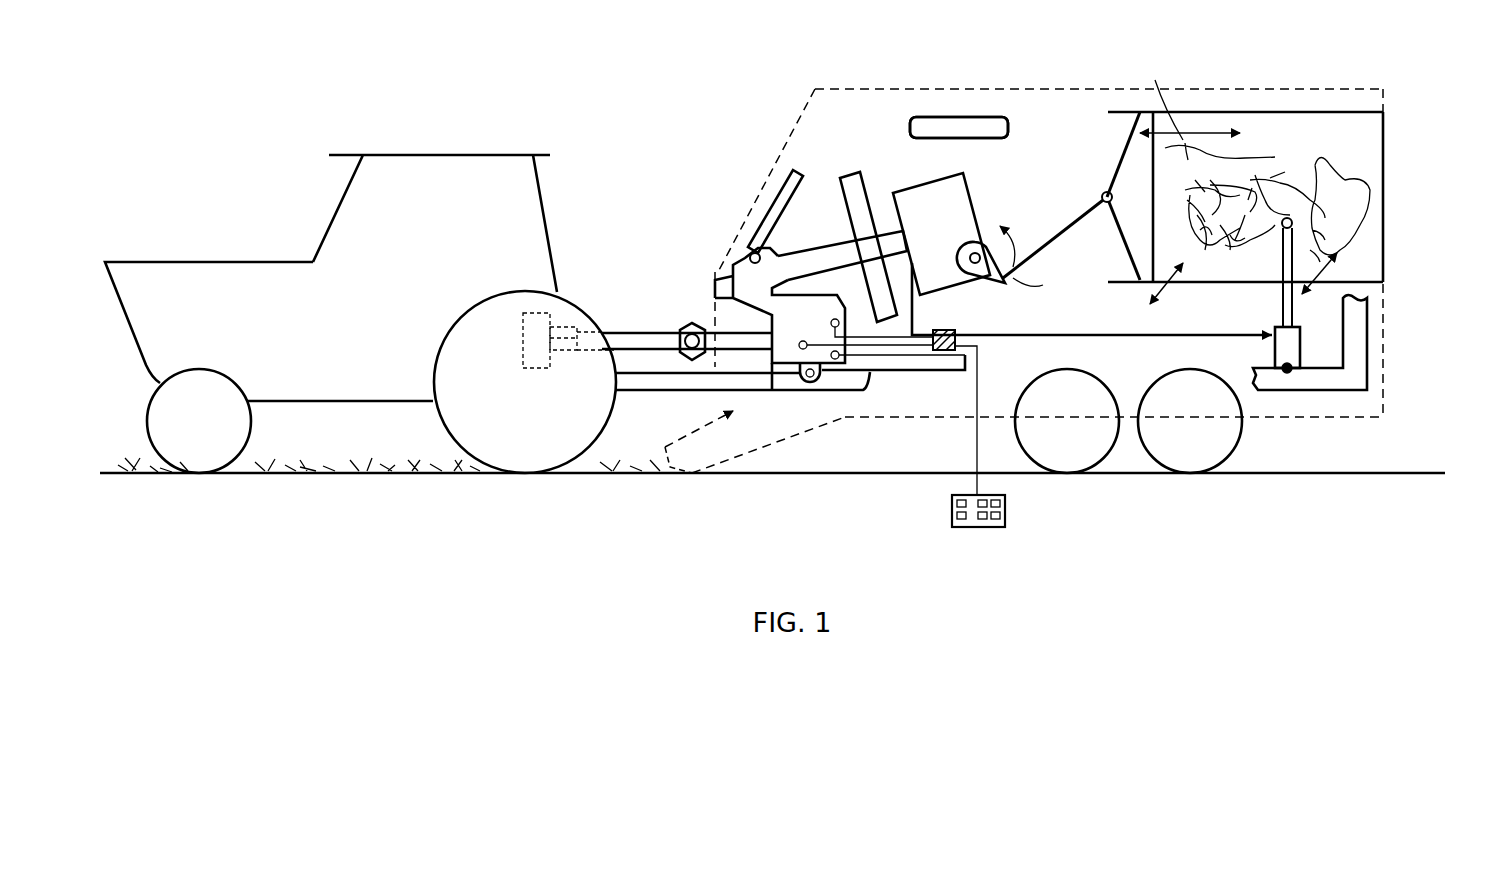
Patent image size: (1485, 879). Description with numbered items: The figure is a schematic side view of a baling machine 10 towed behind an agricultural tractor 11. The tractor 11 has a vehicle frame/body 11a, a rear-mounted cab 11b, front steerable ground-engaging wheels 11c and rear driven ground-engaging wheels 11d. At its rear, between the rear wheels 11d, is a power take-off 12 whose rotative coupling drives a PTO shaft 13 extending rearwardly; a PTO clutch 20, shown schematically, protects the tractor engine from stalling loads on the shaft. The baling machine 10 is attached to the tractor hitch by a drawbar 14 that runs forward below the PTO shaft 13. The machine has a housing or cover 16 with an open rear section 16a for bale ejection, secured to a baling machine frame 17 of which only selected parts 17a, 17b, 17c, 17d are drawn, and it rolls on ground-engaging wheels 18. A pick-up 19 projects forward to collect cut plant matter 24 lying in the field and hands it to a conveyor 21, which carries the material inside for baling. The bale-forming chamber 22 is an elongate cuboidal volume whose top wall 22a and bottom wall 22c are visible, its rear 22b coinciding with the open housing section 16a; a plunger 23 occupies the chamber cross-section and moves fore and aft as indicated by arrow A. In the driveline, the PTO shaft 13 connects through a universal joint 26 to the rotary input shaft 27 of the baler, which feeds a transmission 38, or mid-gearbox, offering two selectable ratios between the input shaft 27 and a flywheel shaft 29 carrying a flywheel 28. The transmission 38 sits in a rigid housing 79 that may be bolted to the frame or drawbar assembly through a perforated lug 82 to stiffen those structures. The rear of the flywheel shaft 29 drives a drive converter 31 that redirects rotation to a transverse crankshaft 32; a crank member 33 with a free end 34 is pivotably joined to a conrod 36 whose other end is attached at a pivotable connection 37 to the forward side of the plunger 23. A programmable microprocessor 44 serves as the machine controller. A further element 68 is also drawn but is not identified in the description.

The baling machine 10 is at (1007, 270).
The agricultural tractor 11 is at (360, 295).
The vehicle frame/body 11a is at (213, 283).
The rear-mounted cab 11b is at (385, 178).
The front ground-engaging wheels 11c is at (215, 455).
The rear ground-engaging wheels 11d is at (510, 455).
The power take-off 12 is at (538, 328).
The PTO shaft 13 is at (640, 340).
The drawbar 14 is at (635, 383).
The housing 16 is at (1048, 90).
The open housing section 16a is at (1383, 125).
The baling machine frame 17 is at (995, 127).
The frame part 17a is at (792, 382).
The frame part 17b is at (801, 157).
The frame part 17c is at (940, 127).
The frame part 17d is at (1358, 345).
The ground-engaging wheels 18 is at (1067, 455).
The pick-up 19 is at (665, 472).
The PTO clutch 20 is at (568, 342).
The conveyor 21 is at (705, 453).
The bale-forming chamber 22 is at (1287, 173).
The top wall 22a is at (1218, 112).
The rear of bale-forming chamber 22b is at (1383, 167).
The bottom wall 22c is at (1372, 275).
The plunger 23 is at (1122, 140).
The cut plant matter 24 is at (352, 478).
The universal joint 26 is at (688, 325).
The rotary input shaft 27 is at (733, 342).
The flywheel 28 is at (843, 175).
The flywheel shaft 29 is at (893, 193).
The drive converter 31 is at (907, 200).
The crankshaft 32 is at (977, 250).
The crank member 33 is at (983, 267).
The free end 34 is at (1010, 275).
The conrod 36 is at (1082, 213).
The pivotable connection 37 is at (1100, 205).
The transmission 38 is at (742, 277).
The programmable microprocessor 44 is at (957, 347).
The sensor 68 is at (767, 353).
The rigid housing 79 is at (800, 290).
The perforated lug 82 is at (750, 253).